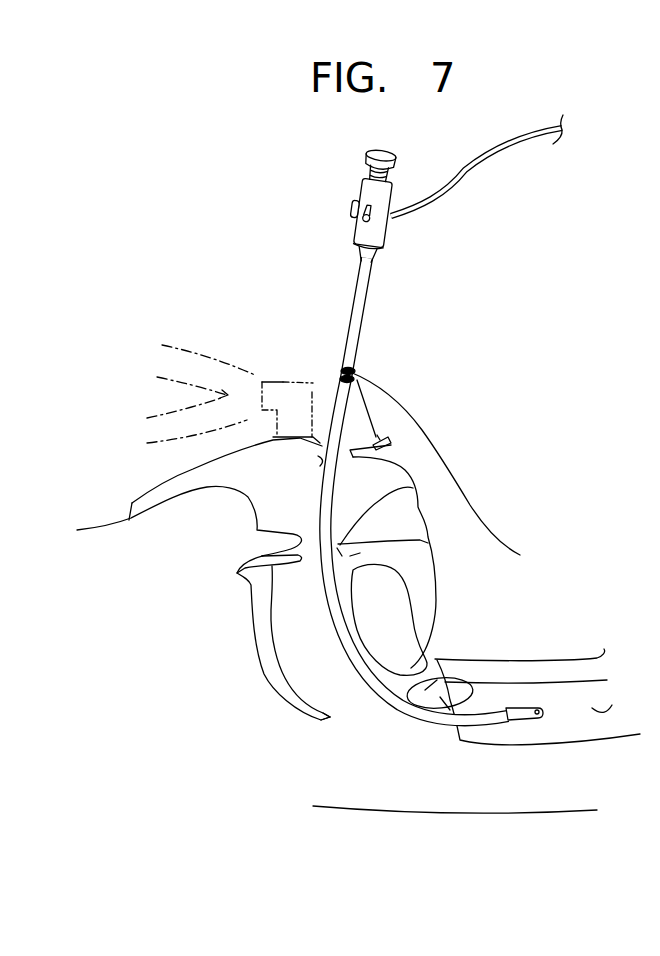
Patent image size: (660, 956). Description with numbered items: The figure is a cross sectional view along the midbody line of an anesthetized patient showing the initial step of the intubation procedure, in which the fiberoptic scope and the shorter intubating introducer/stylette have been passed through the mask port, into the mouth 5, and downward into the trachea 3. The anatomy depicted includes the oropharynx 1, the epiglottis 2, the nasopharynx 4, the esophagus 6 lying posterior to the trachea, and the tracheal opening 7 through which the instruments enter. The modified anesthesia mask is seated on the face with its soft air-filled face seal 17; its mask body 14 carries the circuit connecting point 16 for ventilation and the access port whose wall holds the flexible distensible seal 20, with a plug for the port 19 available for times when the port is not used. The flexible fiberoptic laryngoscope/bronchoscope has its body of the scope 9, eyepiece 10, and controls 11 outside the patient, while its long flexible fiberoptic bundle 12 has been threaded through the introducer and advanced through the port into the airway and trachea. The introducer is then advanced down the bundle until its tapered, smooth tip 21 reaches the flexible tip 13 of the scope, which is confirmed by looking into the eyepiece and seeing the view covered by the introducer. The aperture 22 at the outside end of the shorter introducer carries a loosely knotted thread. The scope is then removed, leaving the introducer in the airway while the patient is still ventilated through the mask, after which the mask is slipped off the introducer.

The oropharynx 1 is at (330, 721).
The epiglottis 2 is at (437, 680).
The trachea 3 is at (612, 705).
The nasopharynx 4 is at (278, 748).
The mouth 5 is at (418, 490).
The esophagus 6 is at (470, 777).
The tracheal opening 7 is at (452, 710).
The body of the scope 9 is at (373, 195).
The eyepiece 10 is at (400, 152).
The controls 11 is at (348, 213).
The fiberoptic bundle 12 is at (355, 300).
The flexible tip 13 is at (543, 707).
The mask body 14 is at (193, 470).
The circuit connecting point 16 is at (284, 397).
The face seal 17 is at (132, 503).
The plug for the port 19 is at (386, 438).
The flexible distensible seal 20 is at (383, 394).
The tapered tip of the introducer 21 is at (512, 710).
The aperture 22 is at (341, 371).